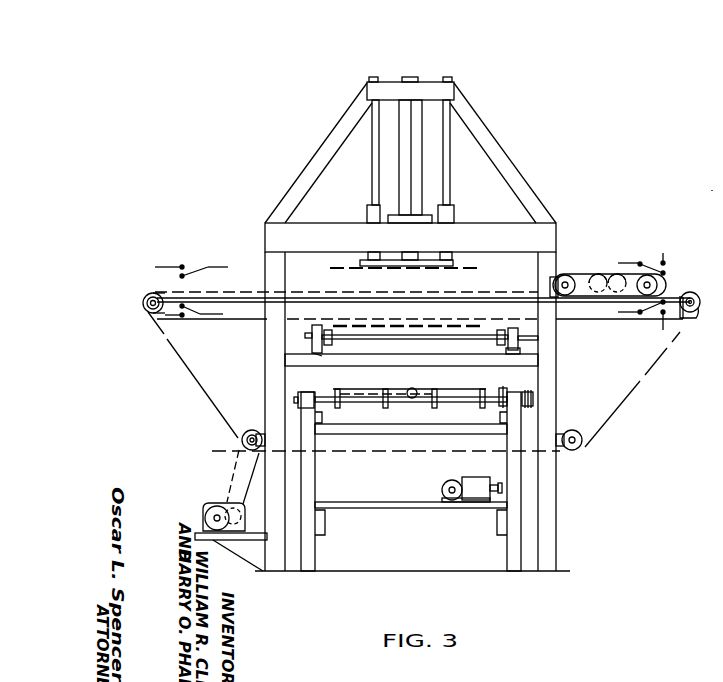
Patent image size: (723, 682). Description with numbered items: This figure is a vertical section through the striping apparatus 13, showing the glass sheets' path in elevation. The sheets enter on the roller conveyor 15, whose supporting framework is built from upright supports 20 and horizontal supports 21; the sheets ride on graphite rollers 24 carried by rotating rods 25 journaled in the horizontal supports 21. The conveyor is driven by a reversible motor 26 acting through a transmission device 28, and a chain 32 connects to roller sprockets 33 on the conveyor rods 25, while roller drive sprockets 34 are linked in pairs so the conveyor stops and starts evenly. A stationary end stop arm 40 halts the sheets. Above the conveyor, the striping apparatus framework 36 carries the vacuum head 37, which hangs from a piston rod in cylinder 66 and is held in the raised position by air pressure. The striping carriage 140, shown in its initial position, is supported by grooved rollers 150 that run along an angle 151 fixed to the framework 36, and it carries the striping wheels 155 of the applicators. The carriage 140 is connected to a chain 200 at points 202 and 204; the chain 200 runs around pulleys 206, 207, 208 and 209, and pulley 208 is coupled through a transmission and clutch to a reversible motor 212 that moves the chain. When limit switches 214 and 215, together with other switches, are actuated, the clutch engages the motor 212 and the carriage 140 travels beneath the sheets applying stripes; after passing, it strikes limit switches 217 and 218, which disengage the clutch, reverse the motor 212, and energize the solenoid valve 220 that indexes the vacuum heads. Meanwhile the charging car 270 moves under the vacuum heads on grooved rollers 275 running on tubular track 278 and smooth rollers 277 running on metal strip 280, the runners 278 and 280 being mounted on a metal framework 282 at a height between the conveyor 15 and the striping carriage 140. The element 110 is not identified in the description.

The striping apparatus 13 is at (264, 368).
The roller conveyor 15 is at (521, 543).
The upright supports 20 is at (310, 480).
The horizontal supports 21 is at (317, 404).
The graphite rollers 24 is at (382, 403).
The rotating rods 25 is at (431, 401).
The reversible motor 26 is at (450, 479).
The transmission device 28 is at (478, 480).
The chain 32 is at (497, 443).
The roller sprockets 33 is at (503, 391).
The roller drive sprockets 34 is at (534, 403).
The striping apparatus framework 36 is at (553, 370).
The vacuum head 37 is at (468, 268).
The end stop arm 40 is at (411, 389).
The cylinder 66 is at (413, 76).
The guide rods 110 is at (371, 157).
The striping carriage 140 is at (580, 273).
The rollers 150 is at (572, 298).
The angle 151 is at (448, 298).
The striping wheels 155 is at (612, 271).
The chain 200 is at (192, 375).
The connection point 202 is at (670, 293).
The connection point 204 is at (543, 288).
The pulley 206 is at (694, 308).
The pulley 207 is at (574, 432).
The pulley 208 is at (249, 430).
The pulley 209 is at (142, 298).
The reversible motor 212 is at (217, 504).
The limit switch 214 is at (663, 313).
The limit switch 215 is at (641, 265).
The limit switch 217 is at (193, 318).
The limit switch 218 is at (200, 265).
The solenoid valve 220 is at (712, 180).
The charging car 270 is at (474, 338).
The rollers 275 is at (311, 331).
The rollers 277 is at (523, 328).
The tubular track 278 is at (313, 356).
The metal strip 280 is at (530, 348).
The metal framework 282 is at (405, 358).